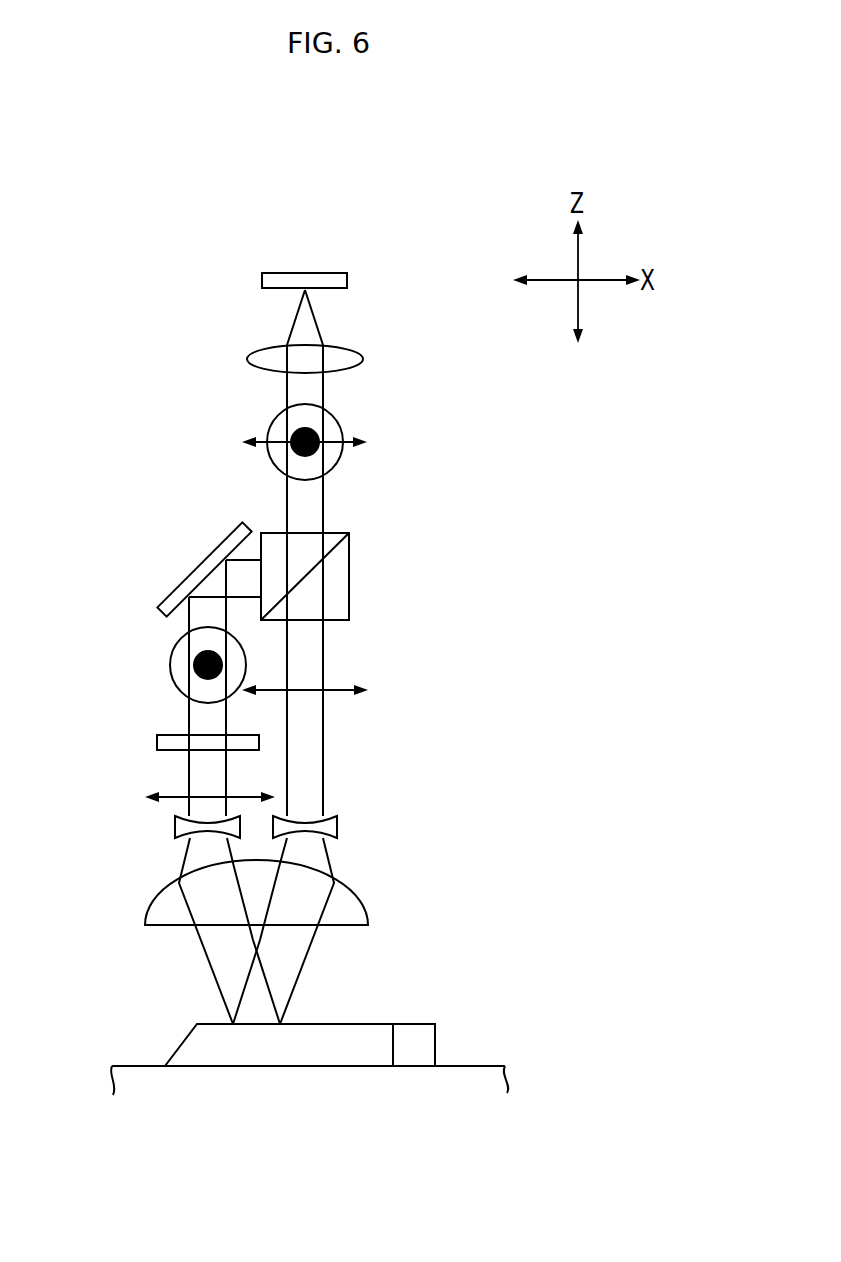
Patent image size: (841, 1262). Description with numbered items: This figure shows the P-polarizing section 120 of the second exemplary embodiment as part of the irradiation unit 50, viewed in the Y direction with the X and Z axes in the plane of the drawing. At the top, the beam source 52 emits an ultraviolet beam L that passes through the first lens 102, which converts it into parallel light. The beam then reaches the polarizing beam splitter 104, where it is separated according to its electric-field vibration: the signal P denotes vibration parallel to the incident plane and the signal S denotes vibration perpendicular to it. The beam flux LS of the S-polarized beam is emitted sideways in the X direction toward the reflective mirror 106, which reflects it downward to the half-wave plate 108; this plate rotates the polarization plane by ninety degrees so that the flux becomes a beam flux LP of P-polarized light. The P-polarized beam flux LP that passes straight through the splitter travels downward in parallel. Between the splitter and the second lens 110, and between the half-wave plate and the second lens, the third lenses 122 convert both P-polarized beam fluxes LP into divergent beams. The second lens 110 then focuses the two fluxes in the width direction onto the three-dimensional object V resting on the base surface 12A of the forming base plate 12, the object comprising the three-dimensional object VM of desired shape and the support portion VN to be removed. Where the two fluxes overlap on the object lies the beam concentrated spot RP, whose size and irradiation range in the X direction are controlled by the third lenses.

The irradiation unit 50 is at (136, 258).
The beam source 52 is at (305, 273).
The ultraviolet beam L is at (314, 314).
The first lens 102 is at (363, 358).
The signal S is at (334, 417).
The signal P is at (348, 447).
The beam flux of S-polarized beam LS is at (252, 558).
The polarizing beam splitter 104 is at (349, 577).
The reflective mirror 106 is at (197, 553).
The P-polarizing section 120 is at (448, 517).
The half-wave plate 108 is at (157, 741).
The beam flux of P-polarized beam LP is at (189, 772).
The third lenses 122 is at (240, 817).
The second lens 110 is at (340, 883).
The forming base plate 12 is at (505, 1079).
The base surface 12A is at (482, 1065).
The three-dimensional object V is at (386, 1010).
The three-dimensional object having a desired shape VM is at (347, 1024).
The support portion VN is at (435, 1038).
The beam concentrated spot RP is at (253, 1024).